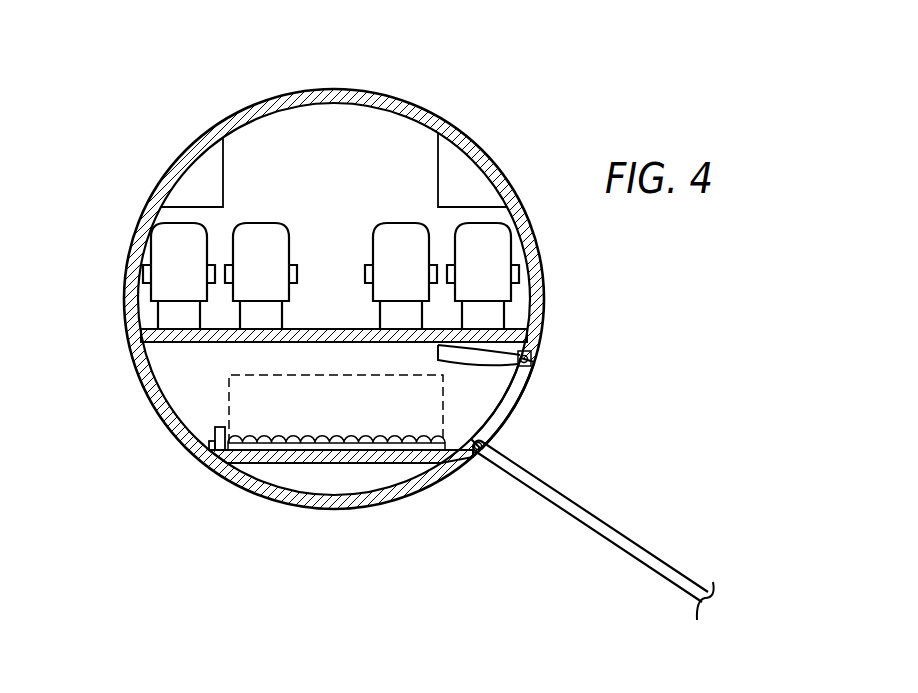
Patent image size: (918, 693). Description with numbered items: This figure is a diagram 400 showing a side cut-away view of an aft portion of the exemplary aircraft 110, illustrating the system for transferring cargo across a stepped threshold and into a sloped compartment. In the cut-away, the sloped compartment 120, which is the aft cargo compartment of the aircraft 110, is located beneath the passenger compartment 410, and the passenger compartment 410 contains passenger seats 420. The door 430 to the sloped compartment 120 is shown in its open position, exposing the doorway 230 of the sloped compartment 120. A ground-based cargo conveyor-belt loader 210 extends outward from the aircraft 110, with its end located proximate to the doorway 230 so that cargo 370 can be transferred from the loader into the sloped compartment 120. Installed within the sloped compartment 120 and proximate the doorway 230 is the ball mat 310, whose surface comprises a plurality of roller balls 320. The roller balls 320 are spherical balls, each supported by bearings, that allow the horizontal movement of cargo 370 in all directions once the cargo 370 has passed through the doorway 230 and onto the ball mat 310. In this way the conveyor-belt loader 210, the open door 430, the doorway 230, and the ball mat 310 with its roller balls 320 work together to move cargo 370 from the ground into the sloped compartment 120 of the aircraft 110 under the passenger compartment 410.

The aircraft 110 is at (413, 80).
The sloped compartment 120 is at (170, 373).
The ground-based cargo conveyor-belt loader 210 is at (615, 542).
The doorway 230 is at (505, 403).
The ball mat 310 is at (253, 448).
The roller balls 320 is at (350, 440).
The cargo 370 is at (243, 400).
The diagram 400 is at (633, 455).
The passenger compartment 410 is at (307, 137).
The passenger seats 420 is at (253, 243).
The door 430 is at (495, 360).